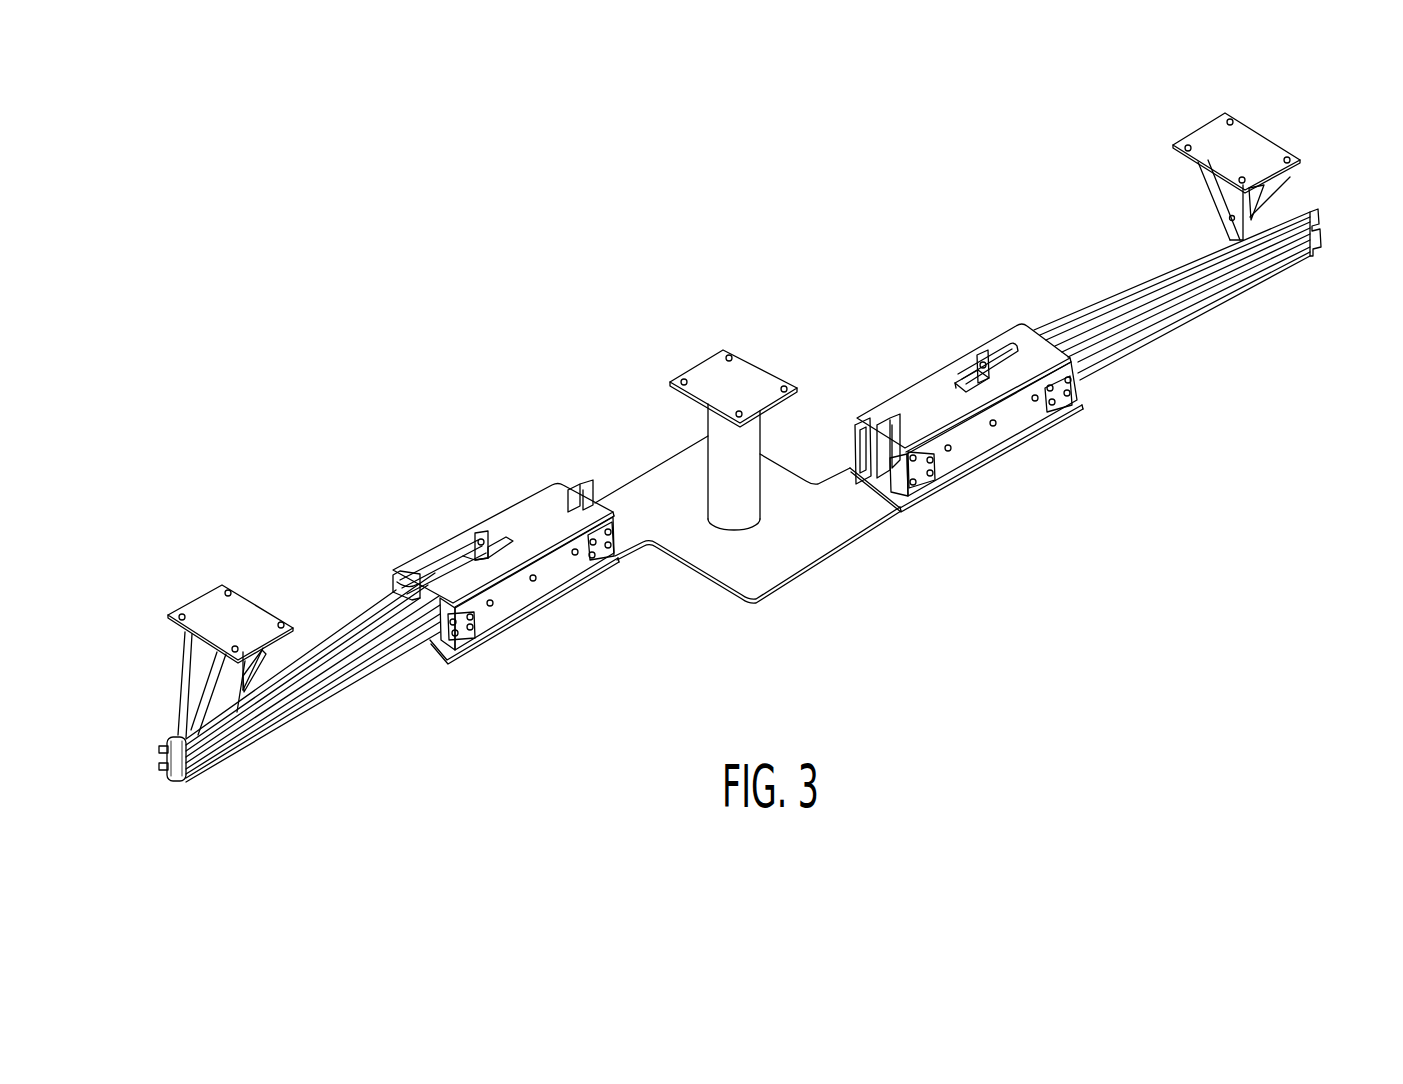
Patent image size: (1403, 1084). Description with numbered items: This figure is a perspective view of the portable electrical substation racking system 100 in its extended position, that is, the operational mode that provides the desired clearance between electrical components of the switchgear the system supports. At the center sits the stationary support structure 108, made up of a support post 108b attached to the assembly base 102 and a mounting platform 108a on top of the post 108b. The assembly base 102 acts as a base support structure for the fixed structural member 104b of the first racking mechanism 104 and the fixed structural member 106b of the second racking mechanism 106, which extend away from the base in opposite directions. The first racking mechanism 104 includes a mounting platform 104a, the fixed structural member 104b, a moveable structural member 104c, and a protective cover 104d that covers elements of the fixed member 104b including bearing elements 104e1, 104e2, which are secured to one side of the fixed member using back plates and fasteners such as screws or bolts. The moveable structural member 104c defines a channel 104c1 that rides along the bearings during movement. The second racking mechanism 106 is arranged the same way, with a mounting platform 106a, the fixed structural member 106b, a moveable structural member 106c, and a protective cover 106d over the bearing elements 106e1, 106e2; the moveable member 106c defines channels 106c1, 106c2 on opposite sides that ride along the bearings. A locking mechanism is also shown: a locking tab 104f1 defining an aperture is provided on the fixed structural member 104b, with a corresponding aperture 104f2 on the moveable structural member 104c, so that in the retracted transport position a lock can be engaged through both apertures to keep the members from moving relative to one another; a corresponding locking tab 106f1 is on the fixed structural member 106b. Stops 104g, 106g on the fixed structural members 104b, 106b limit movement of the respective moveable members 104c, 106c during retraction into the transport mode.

The portable electrical substation racking system 100 is at (722, 220).
The assembly base 102 is at (790, 472).
The first racking mechanism 104 is at (1060, 268).
The mounting platform 104a is at (1258, 142).
The fixed structural member 104b is at (1013, 432).
The moveable structural member 104c is at (1156, 338).
The channel 104c1 is at (1318, 212).
The protective cover 104d is at (928, 388).
The bearing element 104e1 is at (1058, 393).
The bearing element 104e2 is at (923, 484).
The locking tab 104f1 is at (986, 356).
The aperture 104f2 is at (1233, 226).
The stop 104g is at (890, 412).
The second racking mechanism 106 is at (320, 605).
The mounting platform 106a is at (202, 594).
The fixed structural member 106b is at (527, 598).
The moveable structural member 106c is at (174, 766).
The channel 106c1 is at (214, 774).
The channel 106c2 is at (162, 730).
The protective cover 106d is at (527, 510).
The bearing element 106e1 is at (600, 548).
The bearing element 106e2 is at (465, 630).
The locking tab 106f1 is at (480, 540).
The stop 106g is at (587, 482).
The stationary support structure 108 is at (682, 431).
The mounting platform 108a is at (749, 359).
The support post 108b is at (731, 514).